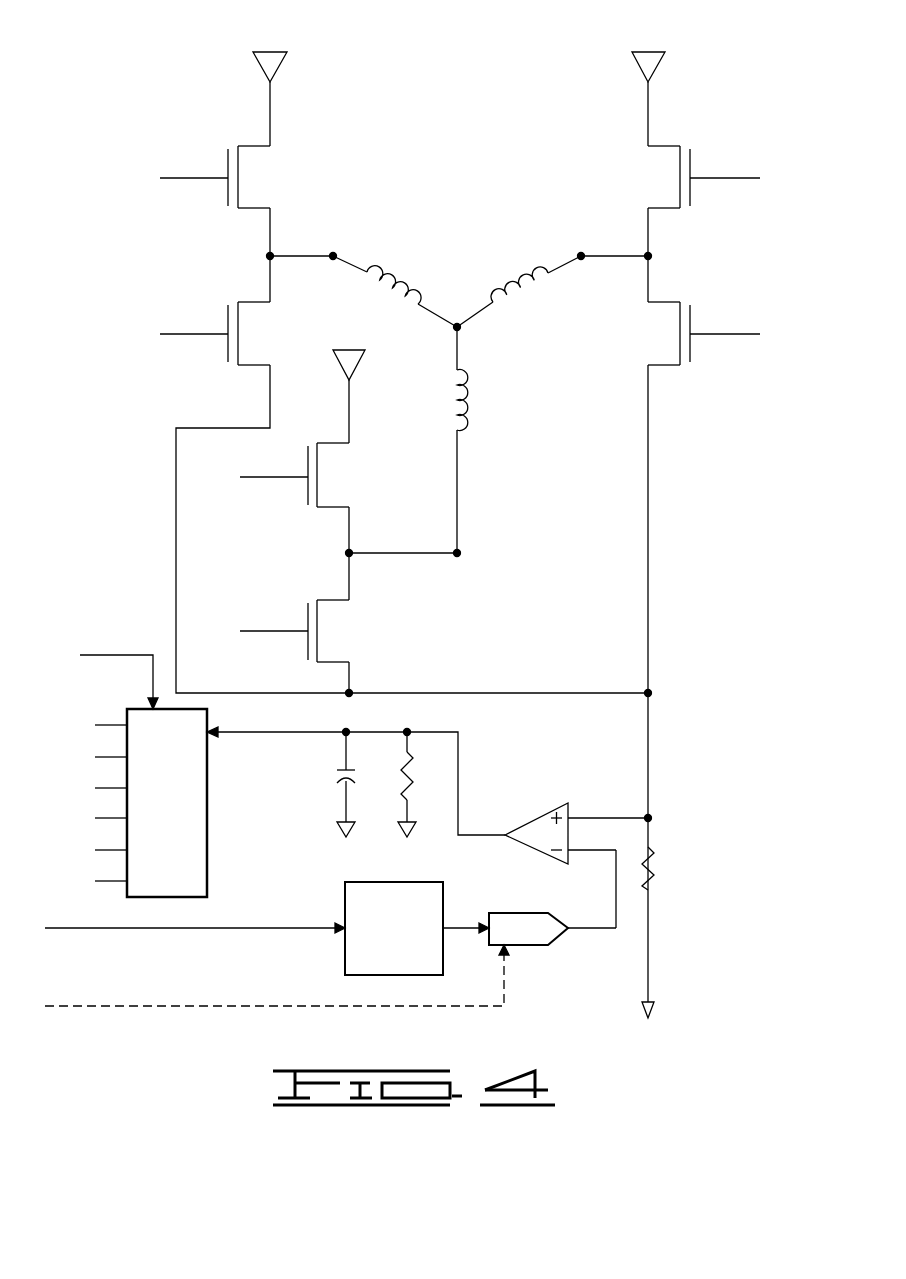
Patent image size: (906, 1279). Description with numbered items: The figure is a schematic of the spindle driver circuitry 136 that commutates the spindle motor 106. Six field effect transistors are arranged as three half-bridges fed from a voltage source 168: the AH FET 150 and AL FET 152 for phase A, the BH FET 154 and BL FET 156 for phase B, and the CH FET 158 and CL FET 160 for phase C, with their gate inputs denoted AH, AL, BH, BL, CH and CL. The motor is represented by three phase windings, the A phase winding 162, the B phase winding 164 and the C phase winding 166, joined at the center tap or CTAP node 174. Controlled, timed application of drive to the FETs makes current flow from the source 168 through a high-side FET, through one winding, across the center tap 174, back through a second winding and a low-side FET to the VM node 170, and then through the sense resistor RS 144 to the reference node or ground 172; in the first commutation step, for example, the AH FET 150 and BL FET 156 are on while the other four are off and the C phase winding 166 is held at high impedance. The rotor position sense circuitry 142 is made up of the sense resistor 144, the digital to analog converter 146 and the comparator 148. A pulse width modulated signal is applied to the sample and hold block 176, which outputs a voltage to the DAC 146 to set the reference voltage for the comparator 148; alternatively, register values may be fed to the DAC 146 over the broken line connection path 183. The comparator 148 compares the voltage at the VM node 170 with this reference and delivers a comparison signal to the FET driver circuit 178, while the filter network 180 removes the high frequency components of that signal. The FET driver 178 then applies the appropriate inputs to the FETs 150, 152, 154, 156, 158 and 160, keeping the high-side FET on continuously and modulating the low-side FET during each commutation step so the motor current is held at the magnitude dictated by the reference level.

The spindle driver circuitry 136 is at (213, 52).
The voltage source 168 is at (272, 52).
The AH FET 150 is at (228, 157).
The AL FET 152 is at (228, 318).
The BH FET 154 is at (690, 165).
The BL FET 156 is at (690, 352).
The CH FET 158 is at (307, 497).
The CL FET 160 is at (307, 652).
The spindle motor 106 is at (451, 248).
The A phase winding 162 is at (378, 288).
The B phase winding 164 is at (510, 300).
The C phase winding 166 is at (462, 425).
The center tap (CTAP node) 174 is at (440, 342).
The VM node 170 is at (640, 678).
The FET driver circuit 178 is at (207, 835).
The filter network 180 is at (428, 838).
The comparator 148 is at (540, 816).
The sample and hold block 176 is at (393, 880).
The digital to analog converter (DAC) 146 is at (533, 945).
The broken line connection path 183 is at (312, 1010).
The rotor position sense (RPS) circuitry 142 is at (706, 838).
The sense resistor RS 144 is at (655, 885).
The reference node (ground) 172 is at (655, 1012).